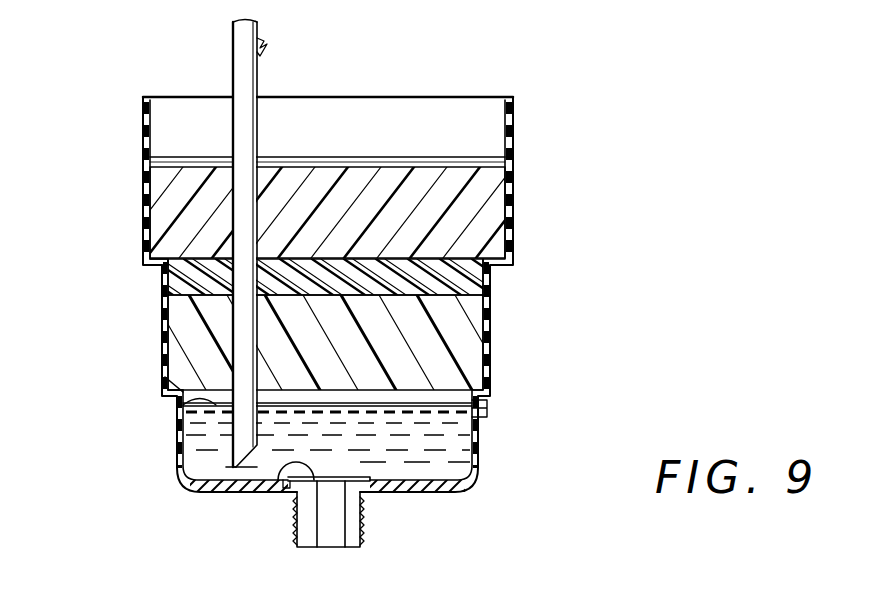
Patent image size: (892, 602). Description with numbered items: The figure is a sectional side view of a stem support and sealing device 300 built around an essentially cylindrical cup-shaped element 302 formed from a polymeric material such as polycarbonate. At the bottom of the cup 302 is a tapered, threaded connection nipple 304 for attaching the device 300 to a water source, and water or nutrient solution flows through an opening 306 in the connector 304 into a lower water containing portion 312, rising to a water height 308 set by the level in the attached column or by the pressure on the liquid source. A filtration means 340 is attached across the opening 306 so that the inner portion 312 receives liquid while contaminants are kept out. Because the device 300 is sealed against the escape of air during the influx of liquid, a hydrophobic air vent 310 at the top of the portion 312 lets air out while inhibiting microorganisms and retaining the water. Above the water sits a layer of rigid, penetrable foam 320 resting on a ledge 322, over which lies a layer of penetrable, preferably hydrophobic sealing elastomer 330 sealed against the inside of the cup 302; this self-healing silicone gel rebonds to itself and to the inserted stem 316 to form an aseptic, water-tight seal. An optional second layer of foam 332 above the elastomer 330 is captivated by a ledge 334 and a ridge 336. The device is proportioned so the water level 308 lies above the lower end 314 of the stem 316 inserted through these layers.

The support and sealing device 300 is at (583, 180).
The cup-shaped element 302 is at (143, 217).
The threaded connection nipple 304 is at (350, 535).
The opening 306 is at (337, 548).
The water height 308 is at (186, 405).
The hydrophobic air vent 310 is at (484, 408).
The lower water containing portion 312 is at (440, 462).
The lower end of the stem 314 is at (233, 464).
The stem 316 is at (236, 31).
The layer of rigid penetrable foam 320 is at (465, 356).
The ledge 322 is at (170, 383).
The layer of penetrable elastomeric sealing elastomer 330 is at (458, 285).
The second layer of foam 332 is at (483, 213).
The ledge 334 is at (156, 258).
The ridge 336 is at (487, 160).
The filtration means 340 is at (297, 468).